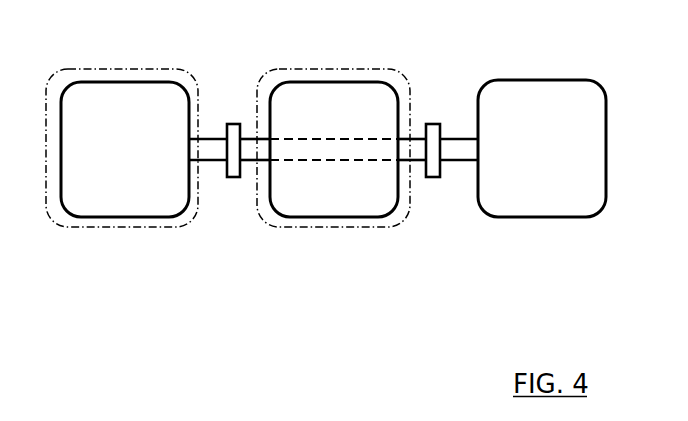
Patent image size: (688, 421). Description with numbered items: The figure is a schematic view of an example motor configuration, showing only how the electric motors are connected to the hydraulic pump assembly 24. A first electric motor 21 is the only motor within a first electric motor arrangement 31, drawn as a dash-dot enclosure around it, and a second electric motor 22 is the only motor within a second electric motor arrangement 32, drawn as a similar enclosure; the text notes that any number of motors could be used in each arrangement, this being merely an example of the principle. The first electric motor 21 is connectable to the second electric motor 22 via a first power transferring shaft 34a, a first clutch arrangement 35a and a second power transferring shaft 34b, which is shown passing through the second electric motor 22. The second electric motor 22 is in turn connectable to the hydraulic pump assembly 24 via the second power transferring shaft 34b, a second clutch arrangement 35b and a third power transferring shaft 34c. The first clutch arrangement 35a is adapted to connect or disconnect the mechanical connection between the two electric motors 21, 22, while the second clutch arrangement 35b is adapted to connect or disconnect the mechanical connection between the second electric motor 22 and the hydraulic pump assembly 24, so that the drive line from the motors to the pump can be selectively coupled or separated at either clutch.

The first electric motor 21 is at (110, 170).
The second electric motor 22 is at (315, 122).
The hydraulic pump assembly 24 is at (528, 162).
The first electric motor arrangement 31 is at (130, 228).
The second electric motor arrangement 32 is at (352, 228).
The first power transferring shaft 34a is at (217, 148).
The second power transferring shaft 34b is at (305, 147).
The third power transferring shaft 34c is at (449, 149).
The first clutch arrangement 35a is at (232, 122).
The second clutch arrangement 35b is at (432, 122).